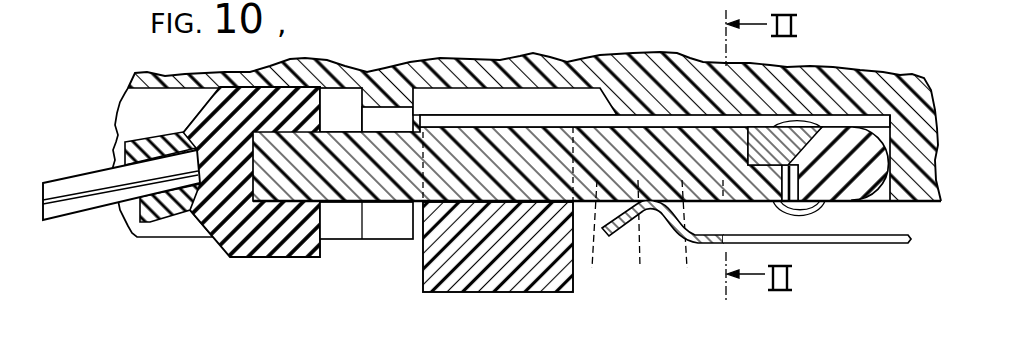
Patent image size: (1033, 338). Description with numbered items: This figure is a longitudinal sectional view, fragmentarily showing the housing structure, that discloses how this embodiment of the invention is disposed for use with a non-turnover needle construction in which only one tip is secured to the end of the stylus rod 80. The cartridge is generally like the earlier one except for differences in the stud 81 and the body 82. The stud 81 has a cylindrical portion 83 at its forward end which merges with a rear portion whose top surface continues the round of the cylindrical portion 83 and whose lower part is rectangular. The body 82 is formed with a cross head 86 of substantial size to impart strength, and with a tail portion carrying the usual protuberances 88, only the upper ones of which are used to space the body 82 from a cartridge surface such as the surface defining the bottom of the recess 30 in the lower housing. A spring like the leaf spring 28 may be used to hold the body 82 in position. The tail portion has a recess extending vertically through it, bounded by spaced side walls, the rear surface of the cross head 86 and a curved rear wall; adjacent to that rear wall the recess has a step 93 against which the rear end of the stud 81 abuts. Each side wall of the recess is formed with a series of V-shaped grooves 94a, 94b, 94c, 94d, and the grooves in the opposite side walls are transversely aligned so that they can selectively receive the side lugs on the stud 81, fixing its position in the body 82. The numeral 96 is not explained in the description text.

The leaf spring 28 is at (838, 244).
The recess 30 is at (843, 128).
The stylus rod 80 is at (67, 215).
The stud 81 is at (392, 203).
The body 82 is at (855, 175).
The cylindrical portion 83 is at (342, 195).
The cross head 86 is at (507, 278).
The protuberances 88 is at (800, 121).
The step 93 is at (770, 143).
The V-shaped groove 94a is at (597, 251).
The V-shaped groove 94b is at (647, 237).
The V-shaped groove 94c is at (693, 254).
The V-shaped groove 94d is at (722, 208).
The block 96 is at (257, 258).